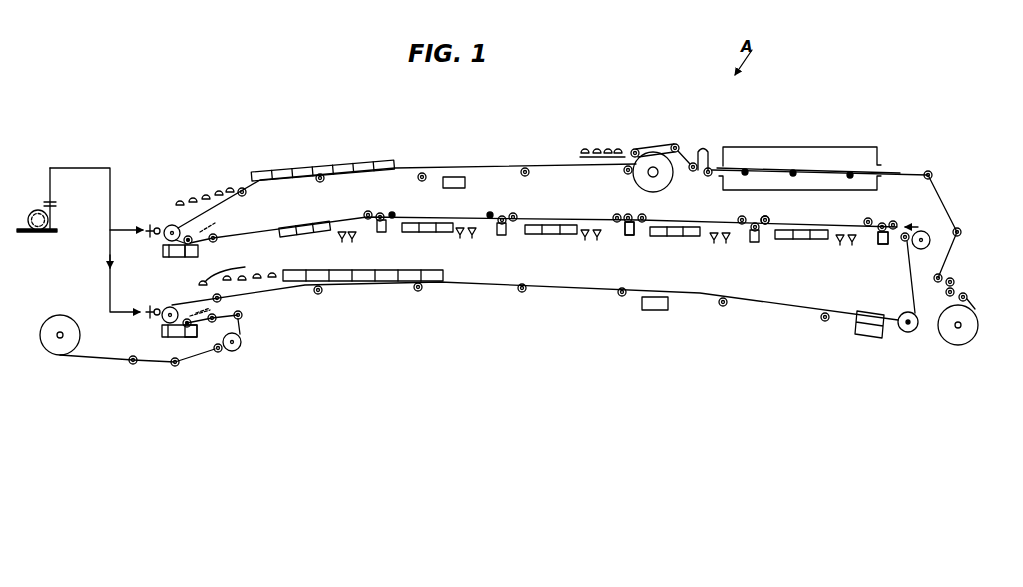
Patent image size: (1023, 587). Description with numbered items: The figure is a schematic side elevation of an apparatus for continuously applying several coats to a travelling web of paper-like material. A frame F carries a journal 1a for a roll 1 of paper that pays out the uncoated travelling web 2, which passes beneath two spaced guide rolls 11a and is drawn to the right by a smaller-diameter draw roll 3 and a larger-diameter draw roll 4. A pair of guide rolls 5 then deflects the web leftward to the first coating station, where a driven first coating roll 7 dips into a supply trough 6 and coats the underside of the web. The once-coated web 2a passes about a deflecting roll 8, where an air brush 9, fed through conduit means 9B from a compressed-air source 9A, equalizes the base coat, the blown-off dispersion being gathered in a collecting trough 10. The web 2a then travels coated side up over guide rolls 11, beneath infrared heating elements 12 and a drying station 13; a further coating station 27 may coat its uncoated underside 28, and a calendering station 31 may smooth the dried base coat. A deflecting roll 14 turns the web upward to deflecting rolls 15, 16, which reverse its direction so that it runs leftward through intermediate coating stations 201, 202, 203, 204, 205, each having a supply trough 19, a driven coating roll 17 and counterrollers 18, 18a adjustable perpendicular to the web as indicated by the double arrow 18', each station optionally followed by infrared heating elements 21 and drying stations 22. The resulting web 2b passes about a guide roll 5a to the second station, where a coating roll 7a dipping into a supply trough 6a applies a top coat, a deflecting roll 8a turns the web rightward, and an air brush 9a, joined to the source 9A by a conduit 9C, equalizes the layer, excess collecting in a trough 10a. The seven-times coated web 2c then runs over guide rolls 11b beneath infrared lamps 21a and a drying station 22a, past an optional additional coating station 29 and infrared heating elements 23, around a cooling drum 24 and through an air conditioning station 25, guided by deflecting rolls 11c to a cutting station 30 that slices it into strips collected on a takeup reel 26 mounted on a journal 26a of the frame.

The roll 1 is at (72, 326).
The journal 1a is at (58, 333).
The travelling web 2 is at (106, 358).
The once-coated web 2a is at (187, 300).
The web 2b is at (280, 236).
The seven-times coated web 2c is at (181, 222).
The smaller-diameter draw roll 3 is at (219, 352).
The larger-diameter draw roll 4 is at (242, 342).
The guide rolls 5 is at (213, 322).
The supply trough 6 is at (192, 338).
The first coating roll 7 is at (191, 312).
The deflecting roll 8 is at (166, 308).
The air brush 9 is at (160, 312).
The source of compressed air 9A is at (34, 210).
The conduit means 9B is at (108, 254).
The conduit 9C is at (114, 226).
The air brush 9a is at (164, 229).
The collecting trough 10 is at (165, 338).
The collecting trough 10a is at (162, 252).
The guide roll 5a is at (218, 236).
The supply trough 6a is at (223, 269).
The coating roll 7a is at (199, 248).
The deflecting roll 8a is at (190, 236).
The guide rolls 11 is at (222, 298).
The guide rolls 11a is at (173, 366).
The guide rolls 11b is at (247, 193).
The guiding and deflecting rolls 11c is at (673, 145).
The infrared heating elements 12 is at (258, 274).
The drying station 13 is at (366, 283).
The deflecting roll 14 is at (908, 333).
The deflecting roll 15 is at (909, 244).
The deflecting roll 16 is at (929, 243).
The coating roll 17 is at (636, 226).
The counterroller 18 is at (788, 212).
The double arrow 18' is at (788, 210).
The counterroller 18a is at (613, 217).
The supply trough 19 is at (382, 232).
The intermediate coating station 201 is at (882, 223).
The intermediate coating station 202 is at (755, 223).
The intermediate coating station 203 is at (630, 210).
The intermediate coating station 204 is at (500, 216).
The intermediate coating station 205 is at (380, 213).
The infrared heating elements 21 is at (349, 241).
The infrared lamps 21a is at (212, 191).
The drying stations 22 is at (312, 236).
The drying station 22a is at (340, 164).
The infrared heating elements 23 is at (611, 152).
The cooling drum 24 is at (668, 180).
The air conditioning station 25 is at (816, 147).
The takeup reel 26 is at (942, 324).
The journal 26a is at (958, 330).
The coating station 27 is at (654, 311).
The uncoated underside 28 is at (506, 169).
The additional coating station 29 is at (453, 177).
The cutting station 30 is at (958, 285).
The calendering station 31 is at (862, 338).
The frame F is at (49, 233).